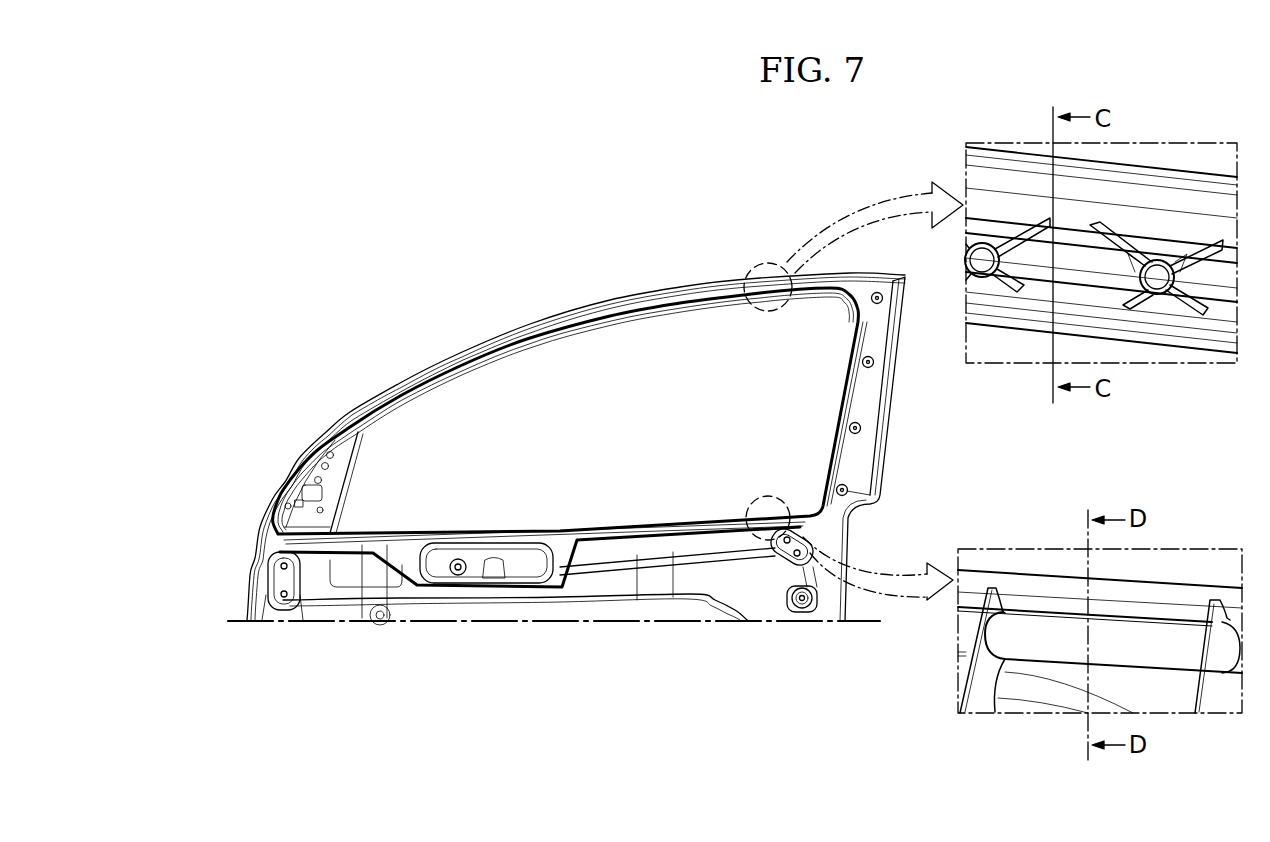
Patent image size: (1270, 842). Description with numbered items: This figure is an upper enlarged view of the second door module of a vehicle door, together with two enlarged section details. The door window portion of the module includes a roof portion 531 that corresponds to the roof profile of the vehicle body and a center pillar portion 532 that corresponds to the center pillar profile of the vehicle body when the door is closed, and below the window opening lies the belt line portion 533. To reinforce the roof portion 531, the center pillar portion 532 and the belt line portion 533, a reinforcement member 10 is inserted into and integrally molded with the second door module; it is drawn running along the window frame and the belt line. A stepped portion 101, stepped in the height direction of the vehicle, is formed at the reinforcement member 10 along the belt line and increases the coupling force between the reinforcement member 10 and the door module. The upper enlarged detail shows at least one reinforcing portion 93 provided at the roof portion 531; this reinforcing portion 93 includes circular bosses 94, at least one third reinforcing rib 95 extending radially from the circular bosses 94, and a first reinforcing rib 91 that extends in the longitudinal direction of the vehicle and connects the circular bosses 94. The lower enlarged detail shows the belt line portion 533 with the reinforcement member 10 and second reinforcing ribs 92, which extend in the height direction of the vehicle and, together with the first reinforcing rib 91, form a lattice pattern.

The reinforcement member 10 is at (552, 321).
The roof portion 531 is at (640, 287).
The center pillar portion 532 is at (873, 438).
The belt line portion 533 is at (608, 542).
The stepped portion 101 is at (457, 588).
The first reinforcing rib 91 is at (1115, 282).
The circular bosses 94 is at (1152, 297).
The third reinforcing rib 95 is at (1192, 312).
The reinforcing portion 93 is at (1094, 348).
The second reinforcing rib 92 is at (978, 702).